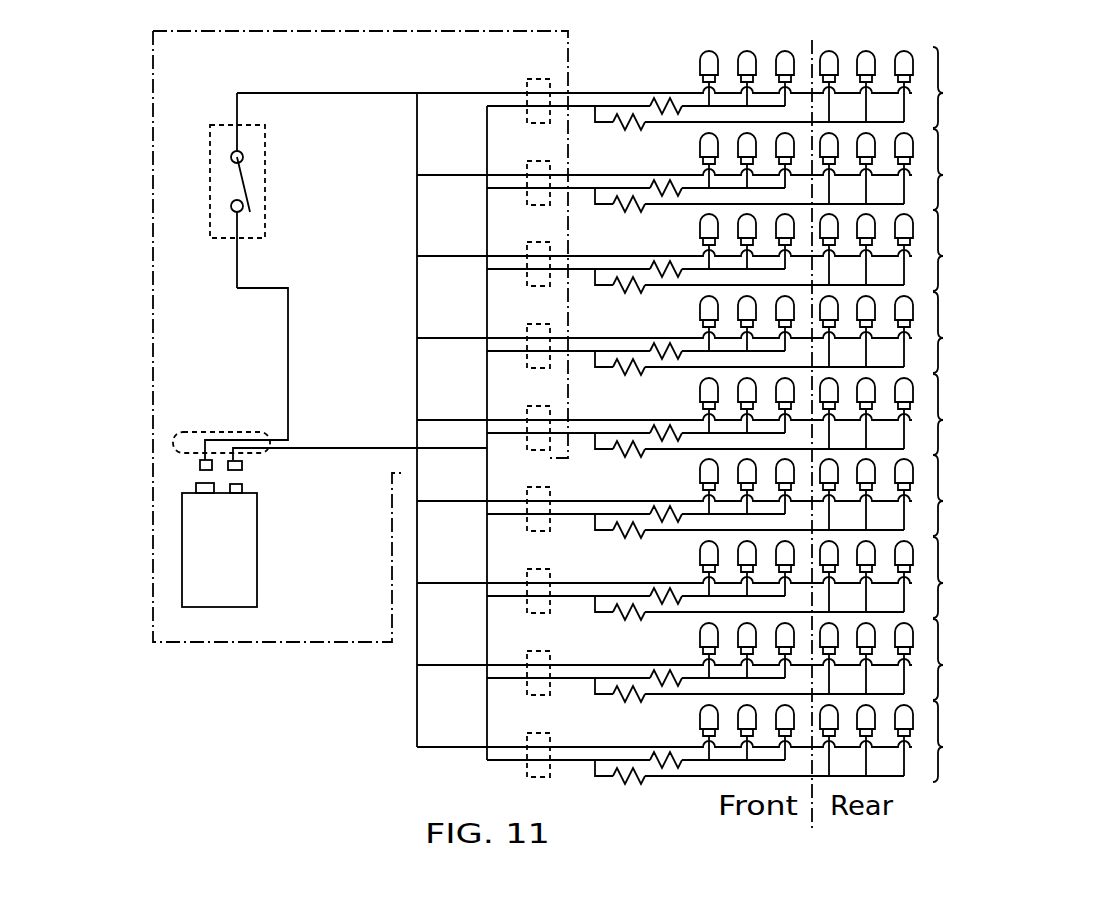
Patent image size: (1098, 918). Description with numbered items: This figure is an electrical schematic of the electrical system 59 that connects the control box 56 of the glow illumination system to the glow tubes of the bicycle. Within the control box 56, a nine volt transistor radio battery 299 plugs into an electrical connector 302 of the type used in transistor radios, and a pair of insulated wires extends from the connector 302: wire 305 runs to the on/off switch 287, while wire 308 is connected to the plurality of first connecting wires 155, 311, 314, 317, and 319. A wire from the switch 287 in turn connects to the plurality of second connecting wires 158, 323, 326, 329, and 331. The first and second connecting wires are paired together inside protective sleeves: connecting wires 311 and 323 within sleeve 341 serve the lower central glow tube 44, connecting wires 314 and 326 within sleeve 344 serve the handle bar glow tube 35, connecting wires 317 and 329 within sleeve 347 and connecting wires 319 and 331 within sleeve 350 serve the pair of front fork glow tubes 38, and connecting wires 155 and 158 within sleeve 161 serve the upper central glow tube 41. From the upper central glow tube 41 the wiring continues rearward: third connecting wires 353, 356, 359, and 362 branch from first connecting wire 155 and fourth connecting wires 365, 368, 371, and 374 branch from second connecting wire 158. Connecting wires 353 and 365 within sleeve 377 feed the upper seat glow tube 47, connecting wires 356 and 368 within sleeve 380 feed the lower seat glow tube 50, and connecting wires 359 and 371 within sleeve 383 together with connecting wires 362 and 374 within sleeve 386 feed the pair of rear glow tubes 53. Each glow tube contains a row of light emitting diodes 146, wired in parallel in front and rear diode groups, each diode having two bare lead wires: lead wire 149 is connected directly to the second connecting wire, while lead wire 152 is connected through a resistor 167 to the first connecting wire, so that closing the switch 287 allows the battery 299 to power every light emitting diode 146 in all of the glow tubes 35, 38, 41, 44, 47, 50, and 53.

The control box 56 is at (372, 644).
The on/off switch 287 is at (265, 165).
The insulated wire 305 is at (288, 330).
The electrical connector 302 is at (206, 430).
The insulated wire 308 is at (340, 445).
The nine volt transistor radio battery 299 is at (258, 537).
The first connecting wire 311 is at (477, 92).
The first connecting wire 314 is at (458, 173).
The first connecting wire 317 is at (458, 254).
The first connecting wire 319 is at (458, 336).
The first connecting wire 155 is at (455, 417).
The third connecting wire 353 is at (458, 499).
The third connecting wire 356 is at (458, 581).
The third connecting wire 359 is at (458, 663).
The third connecting wire 362 is at (458, 745).
The protective sleeve 341 is at (527, 82).
The protective sleeve 344 is at (523, 166).
The protective sleeve 347 is at (523, 247).
The protective sleeve 350 is at (523, 329).
The protective sleeve 161 is at (523, 411).
The protective sleeve 377 is at (523, 492).
The protective sleeve 380 is at (523, 574).
The protective sleeve 383 is at (523, 656).
The protective sleeve 386 is at (523, 738).
The second connecting wire 323 is at (695, 137).
The second connecting wire 326 is at (695, 219).
The second connecting wire 329 is at (695, 300).
The second connecting wire 331 is at (695, 382).
The second connecting wire 158 is at (695, 464).
The fourth connecting wire 365 is at (695, 545).
The fourth connecting wire 368 is at (695, 627).
The fourth connecting wire 371 is at (695, 709).
The fourth connecting wire 374 is at (695, 791).
The resistor 167 is at (651, 460).
The light emitting diode 146 is at (705, 54).
The lead wire 152 is at (722, 84).
The lead wire 149 is at (701, 82).
The lower central glow tube 44 is at (797, 69).
The handle bar glow tube 35 is at (841, 169).
The front fork glow tube 38 is at (841, 291).
The upper central glow tube 41 is at (841, 414).
The upper seat glow tube 47 is at (841, 495).
The lower seat glow tube 50 is at (841, 577).
The rear glow tube 53 is at (841, 700).
The electrical system 59 is at (1010, 123).